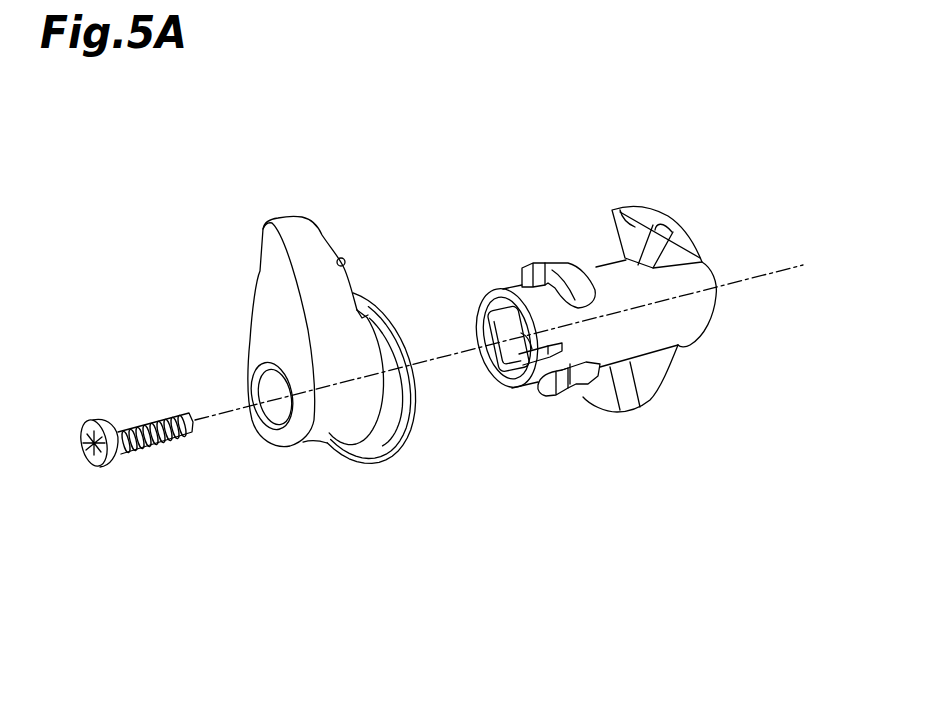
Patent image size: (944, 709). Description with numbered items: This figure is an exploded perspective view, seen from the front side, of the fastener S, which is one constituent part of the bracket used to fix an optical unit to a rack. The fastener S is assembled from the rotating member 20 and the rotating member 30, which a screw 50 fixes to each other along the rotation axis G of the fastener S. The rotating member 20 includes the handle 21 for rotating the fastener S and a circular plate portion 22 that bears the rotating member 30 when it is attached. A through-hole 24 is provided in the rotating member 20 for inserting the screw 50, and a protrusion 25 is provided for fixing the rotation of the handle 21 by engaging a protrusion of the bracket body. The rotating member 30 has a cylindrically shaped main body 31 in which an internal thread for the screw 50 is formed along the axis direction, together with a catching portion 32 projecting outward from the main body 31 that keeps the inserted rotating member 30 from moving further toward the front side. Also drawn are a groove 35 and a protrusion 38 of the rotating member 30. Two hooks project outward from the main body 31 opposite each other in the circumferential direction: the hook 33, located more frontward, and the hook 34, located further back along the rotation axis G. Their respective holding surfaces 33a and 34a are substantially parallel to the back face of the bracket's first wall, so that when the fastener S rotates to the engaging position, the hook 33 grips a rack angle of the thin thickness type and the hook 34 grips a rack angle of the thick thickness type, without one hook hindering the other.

The fastener S is at (486, 137).
The rotation axis G is at (768, 268).
The screw 50 is at (150, 416).
The rotating member 20 is at (293, 212).
The handle 21 is at (270, 317).
The circular plate portion 22 is at (395, 317).
The through-hole 24 is at (287, 413).
The protrusion 25 is at (342, 257).
The rotating member 30 is at (572, 192).
The main body 31 is at (707, 313).
The catching portion 32 is at (548, 262).
The hook 33 is at (648, 370).
The holding surface 33a is at (603, 400).
The hook 34 is at (650, 220).
The holding surface 34a is at (633, 202).
The groove 35 is at (500, 383).
The protrusion 38 is at (520, 281).